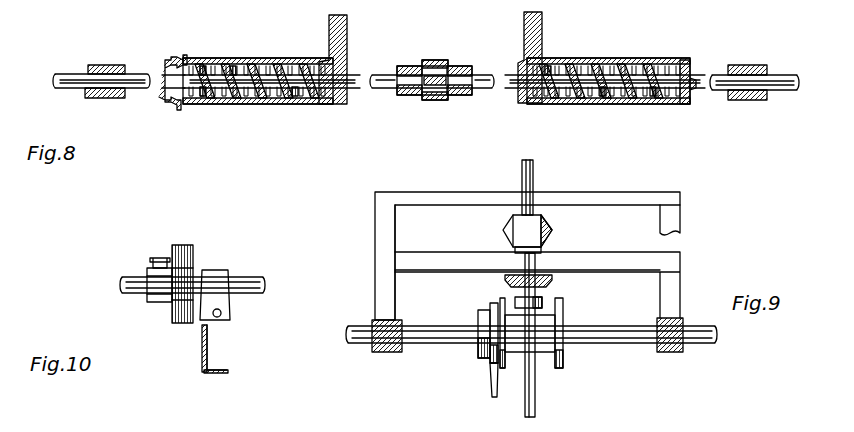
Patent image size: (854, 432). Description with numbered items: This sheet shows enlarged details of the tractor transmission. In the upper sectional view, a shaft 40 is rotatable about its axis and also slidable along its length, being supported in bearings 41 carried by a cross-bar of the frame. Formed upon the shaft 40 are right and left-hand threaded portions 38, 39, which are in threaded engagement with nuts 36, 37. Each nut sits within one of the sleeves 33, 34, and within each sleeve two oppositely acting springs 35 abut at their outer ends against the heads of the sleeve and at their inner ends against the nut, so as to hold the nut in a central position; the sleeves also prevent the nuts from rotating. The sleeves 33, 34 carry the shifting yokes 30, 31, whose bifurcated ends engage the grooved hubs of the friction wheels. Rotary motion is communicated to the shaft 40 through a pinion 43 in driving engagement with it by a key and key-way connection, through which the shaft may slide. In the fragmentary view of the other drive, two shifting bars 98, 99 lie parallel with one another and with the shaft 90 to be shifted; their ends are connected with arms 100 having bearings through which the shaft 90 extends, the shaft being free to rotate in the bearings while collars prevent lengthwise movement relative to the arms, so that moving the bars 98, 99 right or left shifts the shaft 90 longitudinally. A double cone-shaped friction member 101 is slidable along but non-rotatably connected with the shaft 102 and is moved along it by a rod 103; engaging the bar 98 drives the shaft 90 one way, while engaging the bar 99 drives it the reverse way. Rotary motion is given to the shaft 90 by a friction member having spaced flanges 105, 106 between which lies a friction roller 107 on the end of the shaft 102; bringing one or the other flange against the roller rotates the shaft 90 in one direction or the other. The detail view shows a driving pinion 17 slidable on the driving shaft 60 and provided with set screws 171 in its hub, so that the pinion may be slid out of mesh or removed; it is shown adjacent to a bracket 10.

In FIG. 8, the shaft 40 is at (57, 72).
In FIG. 8, the bearings 41 is at (97, 65).
In FIG. 8, the left-hand threaded portion 39 is at (185, 80).
In FIG. 8, the nut 37 is at (268, 62).
In FIG. 8, the sleeve 34 is at (258, 104).
In FIG. 8, the springs 35 is at (220, 100).
In FIG. 8, the shifting yoke 31 is at (348, 38).
In FIG. 8, the pinion 43 is at (435, 63).
In FIG. 8, the shifting yoke 30 is at (522, 37).
In FIG. 8, the nut 36 is at (607, 62).
In FIG. 8, the sleeve 33 is at (628, 100).
In FIG. 8, the right-hand threaded portion 38 is at (693, 78).
In FIG. 10, the driving shaft 60 is at (245, 278).
In FIG. 10, the set screws 171 is at (158, 257).
In FIG. 10, the driving pinions 17 is at (193, 255).
In FIG. 10, the bracket 10 is at (207, 352).
In FIG. 9, the shifting bar 98 is at (465, 192).
In FIG. 9, the arms 100 is at (380, 250).
In FIG. 9, the shifting bar 99 is at (415, 268).
In FIG. 9, the shaft 102 is at (534, 174).
In FIG. 9, the double cone-shaped friction member 101 is at (560, 224).
In FIG. 9, the rod 103 is at (528, 409).
In FIG. 9, the friction roller 107 is at (513, 302).
In FIG. 9, the shaft 90 is at (365, 325).
In FIG. 9, the friction flange 105 is at (512, 300).
In FIG. 9, the friction flange 106 is at (563, 312).